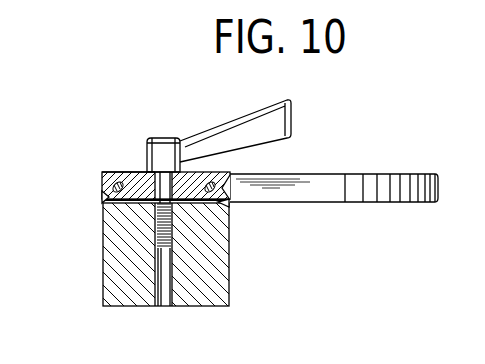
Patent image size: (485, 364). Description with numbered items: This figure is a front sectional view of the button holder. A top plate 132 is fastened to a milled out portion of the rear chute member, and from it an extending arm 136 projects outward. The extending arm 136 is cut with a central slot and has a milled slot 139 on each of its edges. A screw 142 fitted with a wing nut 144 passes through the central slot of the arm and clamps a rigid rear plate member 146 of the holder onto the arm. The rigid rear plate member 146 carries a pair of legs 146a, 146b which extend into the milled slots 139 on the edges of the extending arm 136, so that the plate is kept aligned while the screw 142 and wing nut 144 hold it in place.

The top plate 132 is at (302, 173).
The extending arm 136 is at (102, 173).
The milled slot 139 is at (108, 194).
The screw 142 is at (148, 172).
The wing nut 144 is at (277, 118).
The rigid rear plate member 146 is at (217, 258).
The leg 146a is at (107, 199).
The leg 146b is at (230, 208).